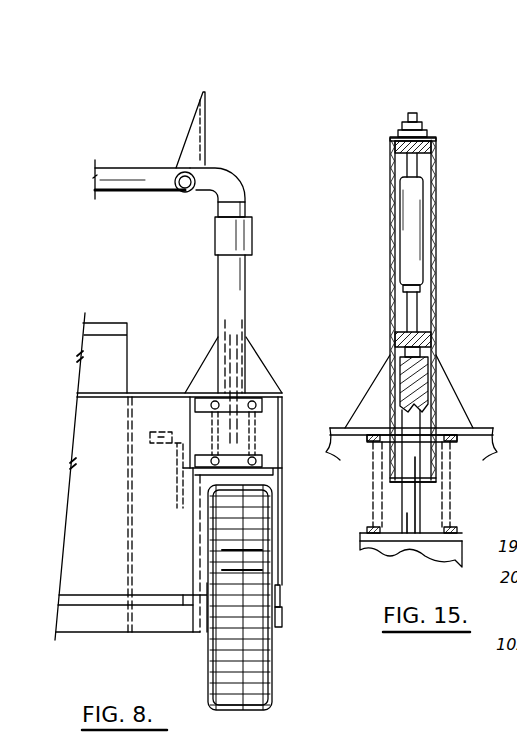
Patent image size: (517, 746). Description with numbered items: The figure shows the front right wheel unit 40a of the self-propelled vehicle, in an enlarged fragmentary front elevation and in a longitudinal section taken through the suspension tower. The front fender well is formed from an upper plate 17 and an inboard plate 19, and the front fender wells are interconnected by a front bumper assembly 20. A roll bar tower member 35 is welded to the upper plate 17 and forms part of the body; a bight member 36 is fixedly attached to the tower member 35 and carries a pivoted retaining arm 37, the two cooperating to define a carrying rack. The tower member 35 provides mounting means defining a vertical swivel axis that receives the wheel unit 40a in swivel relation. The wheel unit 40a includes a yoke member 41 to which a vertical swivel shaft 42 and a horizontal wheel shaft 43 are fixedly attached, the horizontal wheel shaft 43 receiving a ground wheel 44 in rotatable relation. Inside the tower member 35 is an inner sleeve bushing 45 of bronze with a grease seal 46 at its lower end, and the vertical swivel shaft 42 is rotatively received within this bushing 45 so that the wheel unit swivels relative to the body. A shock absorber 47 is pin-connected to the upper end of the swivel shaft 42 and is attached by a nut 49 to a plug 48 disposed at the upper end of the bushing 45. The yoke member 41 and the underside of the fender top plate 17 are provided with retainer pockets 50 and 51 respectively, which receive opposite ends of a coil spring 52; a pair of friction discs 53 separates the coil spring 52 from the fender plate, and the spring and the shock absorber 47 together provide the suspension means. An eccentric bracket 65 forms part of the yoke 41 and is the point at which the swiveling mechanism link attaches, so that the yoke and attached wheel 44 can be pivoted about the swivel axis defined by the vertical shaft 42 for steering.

In FIG. 8, the upper plate 17 is at (157, 390).
In FIG. 15, the upper plate 17 is at (362, 427).
In FIG. 8, the inboard plate 19 is at (127, 427).
In FIG. 8, the front bumper assembly 20 is at (100, 452).
In FIG. 8, the tower member 35 is at (238, 300).
In FIG. 15, the tower member 35 is at (435, 262).
In FIG. 8, the bight member 36 is at (150, 178).
In FIG. 8, the retaining arm 37 is at (193, 132).
In FIG. 8, the wheel unit 40a is at (287, 627).
In FIG. 8, the yoke member 41 is at (270, 472).
In FIG. 15, the yoke member 41 is at (363, 550).
In FIG. 8, the vertical swivel shaft 42 is at (188, 520).
In FIG. 15, the vertical swivel shaft 42 is at (408, 493).
In FIG. 8, the horizontal wheel shaft 43 is at (288, 600).
In FIG. 8, the ground wheel 44 is at (268, 653).
In FIG. 15, the inner sleeve bushing 45 is at (398, 342).
In FIG. 15, the grease seal 46 is at (428, 482).
In FIG. 15, the shock absorber 47 is at (412, 207).
In FIG. 15, the plug 48 is at (432, 148).
In FIG. 15, the nut 49 is at (408, 117).
In FIG. 15, the retainer pocket 50 is at (363, 533).
In FIG. 15, the retainer pocket 51 is at (370, 441).
In FIG. 15, the coil spring 52 is at (448, 512).
In FIG. 15, the friction disc 53 is at (383, 445).
In FIG. 8, the eccentric bracket 65 is at (178, 480).